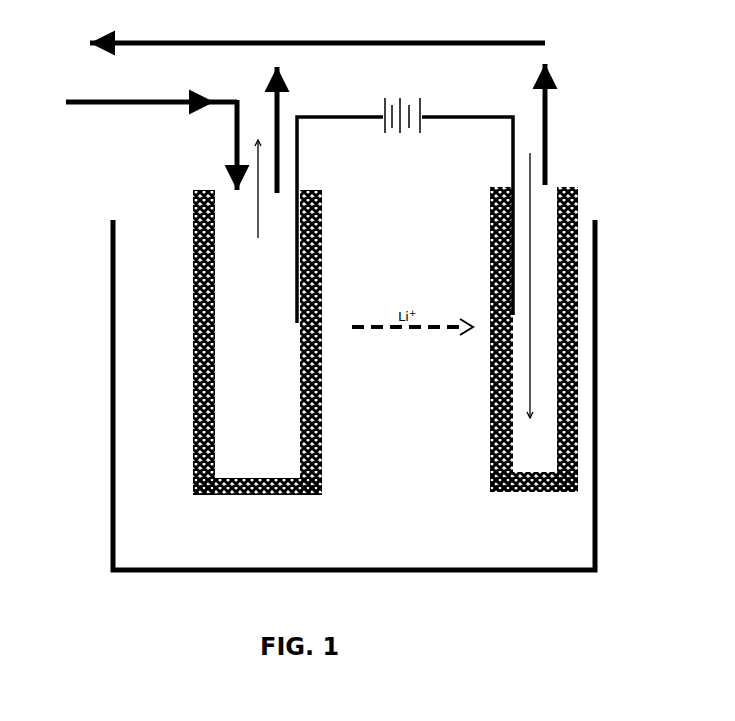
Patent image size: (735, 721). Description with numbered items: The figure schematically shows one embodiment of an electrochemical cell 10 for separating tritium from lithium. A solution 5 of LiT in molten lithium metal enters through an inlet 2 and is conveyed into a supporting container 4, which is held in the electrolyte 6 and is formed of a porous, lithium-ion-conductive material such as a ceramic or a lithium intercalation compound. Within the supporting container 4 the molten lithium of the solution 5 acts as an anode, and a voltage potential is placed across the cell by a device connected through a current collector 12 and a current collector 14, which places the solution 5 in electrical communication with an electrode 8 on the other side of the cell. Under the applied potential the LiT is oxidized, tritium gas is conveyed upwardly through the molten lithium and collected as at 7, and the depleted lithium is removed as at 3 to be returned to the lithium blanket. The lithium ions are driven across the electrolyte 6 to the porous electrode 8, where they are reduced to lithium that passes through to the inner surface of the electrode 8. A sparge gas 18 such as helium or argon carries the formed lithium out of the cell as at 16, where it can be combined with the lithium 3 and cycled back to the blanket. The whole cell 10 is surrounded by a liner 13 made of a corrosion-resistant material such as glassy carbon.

The inlet 2 is at (118, 108).
The lithium removal 3 is at (280, 117).
The supporting container 4 is at (197, 313).
The solution 5 is at (257, 376).
The electrolyte 6 is at (393, 444).
The tritium gas collection 7 is at (255, 205).
The electrode 8 is at (575, 303).
The electrochemical cell 10 is at (640, 84).
The current collector 12 is at (320, 235).
The liner 13 is at (597, 397).
The current collector 14 is at (490, 265).
The lithium exit 16 is at (548, 80).
The sparge gas 18 is at (533, 215).